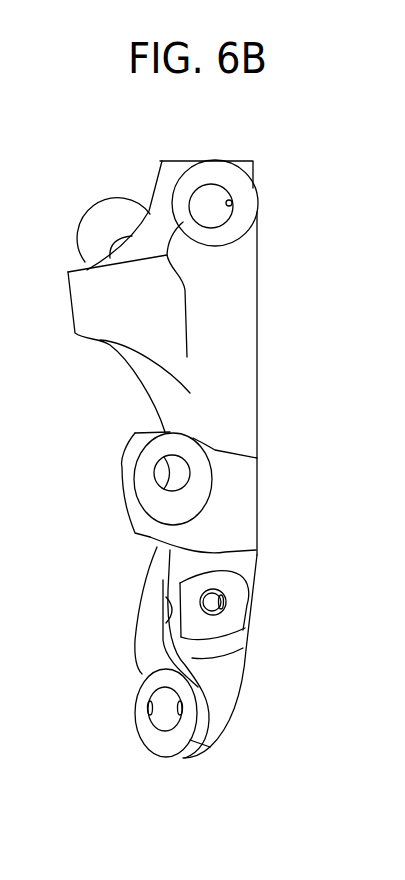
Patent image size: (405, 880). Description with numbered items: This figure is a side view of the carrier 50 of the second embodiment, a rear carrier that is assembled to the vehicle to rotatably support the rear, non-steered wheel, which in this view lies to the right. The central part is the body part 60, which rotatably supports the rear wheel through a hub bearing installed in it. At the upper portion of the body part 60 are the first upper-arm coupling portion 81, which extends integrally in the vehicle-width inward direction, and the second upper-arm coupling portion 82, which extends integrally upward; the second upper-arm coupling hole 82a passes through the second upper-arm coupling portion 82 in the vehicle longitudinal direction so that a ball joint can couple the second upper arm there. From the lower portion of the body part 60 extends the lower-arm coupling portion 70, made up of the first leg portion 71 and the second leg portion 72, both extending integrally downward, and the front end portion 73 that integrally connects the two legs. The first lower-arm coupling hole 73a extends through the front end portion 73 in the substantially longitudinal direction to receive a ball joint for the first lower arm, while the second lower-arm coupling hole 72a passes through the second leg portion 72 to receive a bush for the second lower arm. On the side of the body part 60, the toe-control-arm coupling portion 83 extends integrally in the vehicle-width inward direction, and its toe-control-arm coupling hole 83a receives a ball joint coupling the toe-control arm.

The carrier 50 is at (338, 150).
The body part 60 is at (242, 418).
The lower-arm coupling portion 70 is at (114, 672).
The first leg portion 71 is at (137, 627).
The second leg portion 72 is at (242, 647).
The second lower-arm coupling hole 72a is at (227, 605).
The front end portion 73 is at (150, 732).
The first lower-arm coupling hole 73a is at (150, 718).
The first upper-arm coupling portion 81 is at (107, 215).
The second upper-arm coupling portion 82 is at (208, 162).
The second upper-arm coupling hole 82a is at (232, 206).
The toe-control-arm coupling portion 83 is at (235, 497).
The toe-control-arm coupling hole 83a is at (158, 478).